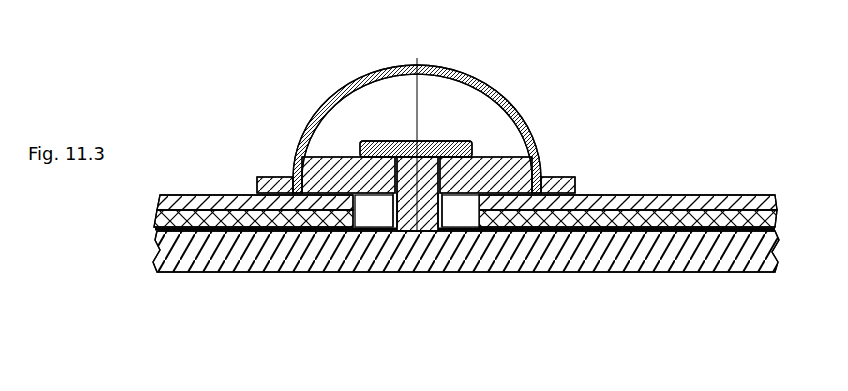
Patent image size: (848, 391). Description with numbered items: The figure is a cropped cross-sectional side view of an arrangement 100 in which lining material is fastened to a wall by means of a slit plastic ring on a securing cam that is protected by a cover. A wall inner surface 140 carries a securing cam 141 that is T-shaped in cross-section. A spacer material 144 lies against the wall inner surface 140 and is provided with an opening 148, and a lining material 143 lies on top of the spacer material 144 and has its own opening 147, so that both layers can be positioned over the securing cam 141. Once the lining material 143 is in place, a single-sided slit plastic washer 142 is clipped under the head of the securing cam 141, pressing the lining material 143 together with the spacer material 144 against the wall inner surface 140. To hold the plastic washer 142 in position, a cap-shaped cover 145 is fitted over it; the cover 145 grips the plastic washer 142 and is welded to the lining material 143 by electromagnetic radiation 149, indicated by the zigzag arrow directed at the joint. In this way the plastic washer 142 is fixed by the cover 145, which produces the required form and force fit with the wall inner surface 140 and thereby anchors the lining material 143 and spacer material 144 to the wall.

The electrical connection arrangement 100 is at (670, 4).
The wall inner surface 140 is at (618, 245).
The securing cam 141 is at (433, 157).
The single-sided slit plastic washer 142 is at (330, 163).
The lining material 143 is at (682, 200).
The spacer material 144 is at (280, 218).
The cap-shaped cover 145 is at (438, 65).
The opening 147 is at (480, 197).
The opening 148 is at (358, 218).
The electromagnetic radiation 149 is at (562, 170).